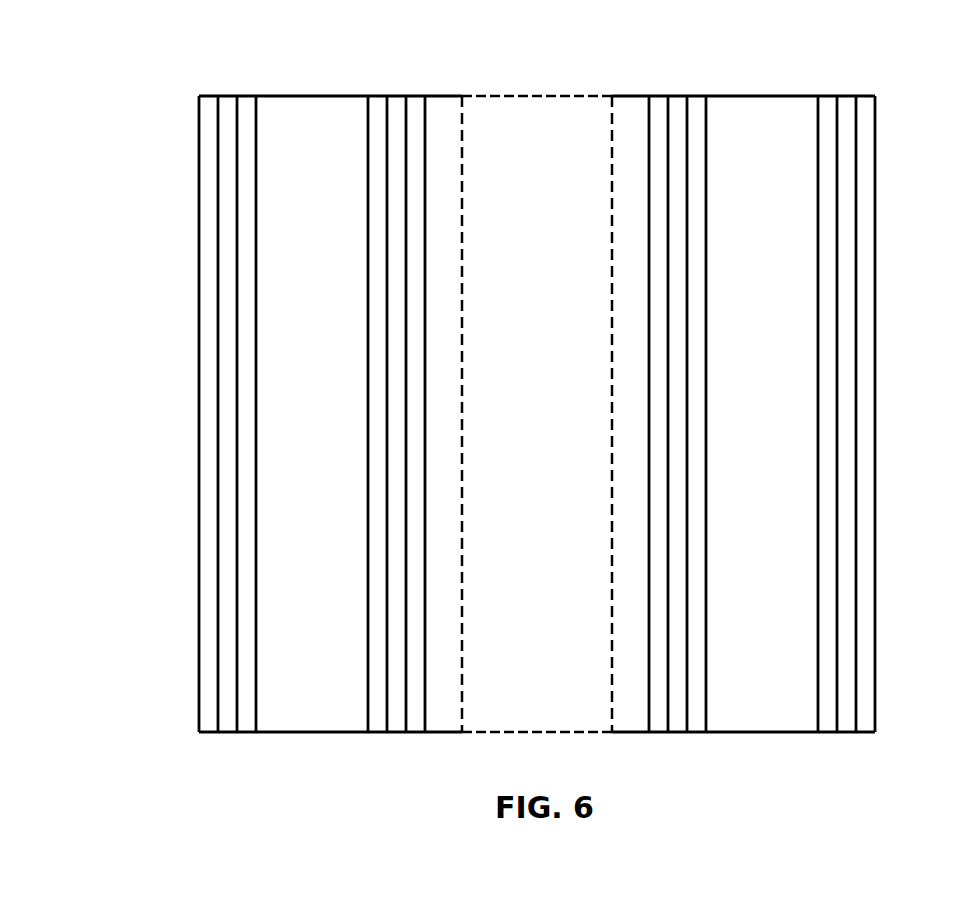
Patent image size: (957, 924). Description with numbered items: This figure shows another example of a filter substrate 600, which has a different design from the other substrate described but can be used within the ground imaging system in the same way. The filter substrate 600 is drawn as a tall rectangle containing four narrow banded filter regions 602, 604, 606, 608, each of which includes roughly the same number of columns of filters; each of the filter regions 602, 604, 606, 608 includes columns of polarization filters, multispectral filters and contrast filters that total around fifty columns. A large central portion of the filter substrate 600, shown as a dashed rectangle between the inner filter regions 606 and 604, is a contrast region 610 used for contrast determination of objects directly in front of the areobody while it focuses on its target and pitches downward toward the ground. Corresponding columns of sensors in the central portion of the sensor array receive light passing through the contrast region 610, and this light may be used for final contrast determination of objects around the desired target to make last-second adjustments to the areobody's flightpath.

The filter substrate 600 is at (118, 107).
The filter region 602 is at (875, 76).
The filter region 604 is at (706, 78).
The filter region 606 is at (425, 78).
The filter region 608 is at (257, 78).
The contrast region 610 is at (560, 403).